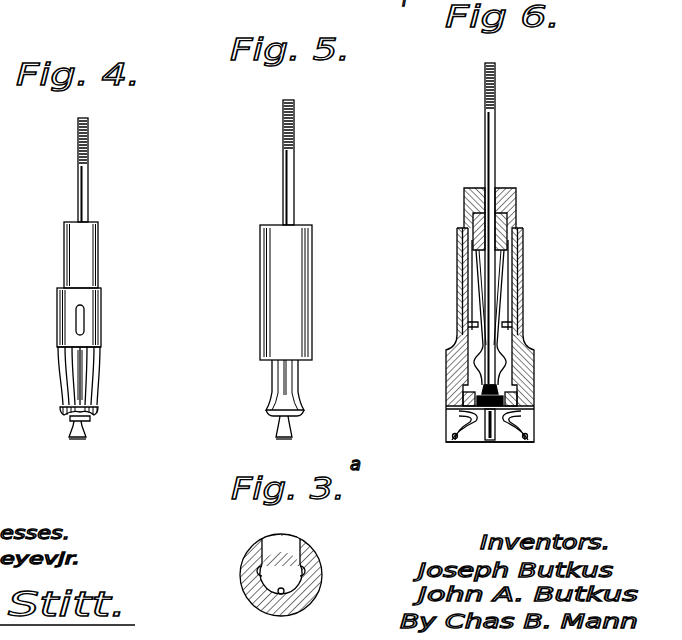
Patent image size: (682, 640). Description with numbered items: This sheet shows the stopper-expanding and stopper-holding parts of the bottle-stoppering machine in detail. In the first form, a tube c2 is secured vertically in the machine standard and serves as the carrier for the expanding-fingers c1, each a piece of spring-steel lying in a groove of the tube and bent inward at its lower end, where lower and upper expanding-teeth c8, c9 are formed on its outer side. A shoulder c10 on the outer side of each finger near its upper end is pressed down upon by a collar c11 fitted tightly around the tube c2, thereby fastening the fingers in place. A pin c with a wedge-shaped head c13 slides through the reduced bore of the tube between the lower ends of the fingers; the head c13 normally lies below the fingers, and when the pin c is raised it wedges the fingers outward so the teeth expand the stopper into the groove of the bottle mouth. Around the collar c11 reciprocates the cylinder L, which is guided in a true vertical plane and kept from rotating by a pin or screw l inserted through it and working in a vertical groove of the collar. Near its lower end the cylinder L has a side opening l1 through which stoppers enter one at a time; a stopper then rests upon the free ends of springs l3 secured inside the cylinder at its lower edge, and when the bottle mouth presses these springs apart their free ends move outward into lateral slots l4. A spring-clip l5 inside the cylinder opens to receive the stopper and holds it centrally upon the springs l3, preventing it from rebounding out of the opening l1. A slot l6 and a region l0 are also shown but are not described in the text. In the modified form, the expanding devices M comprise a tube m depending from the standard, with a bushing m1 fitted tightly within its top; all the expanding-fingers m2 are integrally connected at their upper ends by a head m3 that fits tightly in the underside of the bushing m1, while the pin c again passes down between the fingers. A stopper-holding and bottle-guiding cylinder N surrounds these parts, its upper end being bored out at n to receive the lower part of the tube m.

In FIG. 4, the wedge-pin c is at (88, 182).
In FIG. 5, the wedge-pin c is at (294, 161).
In FIG. 6, the wedge-pin c is at (495, 124).
In FIG. 4, the tube c2 is at (98, 243).
In FIG. 4, the collar c11 is at (101, 306).
In FIG. 4, the slot l6 is at (78, 322).
In FIG. 4, the shoulder c10 is at (101, 348).
In FIG. 4, the expanding-finger c1 is at (96, 380).
In FIG. 4, the upper expanding-tooth c9 is at (98, 410).
In FIG. 4, the lower expanding-tooth c8 is at (90, 419).
In FIG. 4, the wedge-shaped head c13 is at (70, 434).
In FIG. 5, the wedge-shaped head c13 is at (277, 437).
In FIG. 6, the wedge-shaped head c13 is at (482, 391).
In FIG. 5, the tube m is at (312, 249).
In FIG. 6, the tube m is at (516, 210).
In FIG. 5, the expanding devices M is at (306, 292).
In FIG. 6, the expanding devices M is at (515, 307).
In FIG. 6, the bushing m1 is at (465, 199).
In FIG. 5, the expanding-fingers m2 is at (298, 389).
In FIG. 6, the expanding-fingers m2 is at (478, 364).
In FIG. 6, the head m3 is at (477, 238).
In FIG. 6, the stopper-holding and bottle-guiding cylinder N is at (457, 300).
In FIG. 6, the bore n is at (470, 325).
In FIG. 6, the pin or screw l is at (530, 410).
In FIG. 6, the spring-clip l5 is at (517, 400).
In FIG. 3A, the spring-clip l5 is at (262, 570).
In FIG. 6, the lateral slots l4 is at (555, 468).
In FIG. 6, the lower chamber l0 is at (457, 443).
In FIG. 6, the side opening l1 is at (491, 410).
In FIG. 3A, the side opening l1 is at (284, 552).
In FIG. 6, the springs l3 is at (521, 433).
In FIG. 3A, the cylinder L is at (322, 576).